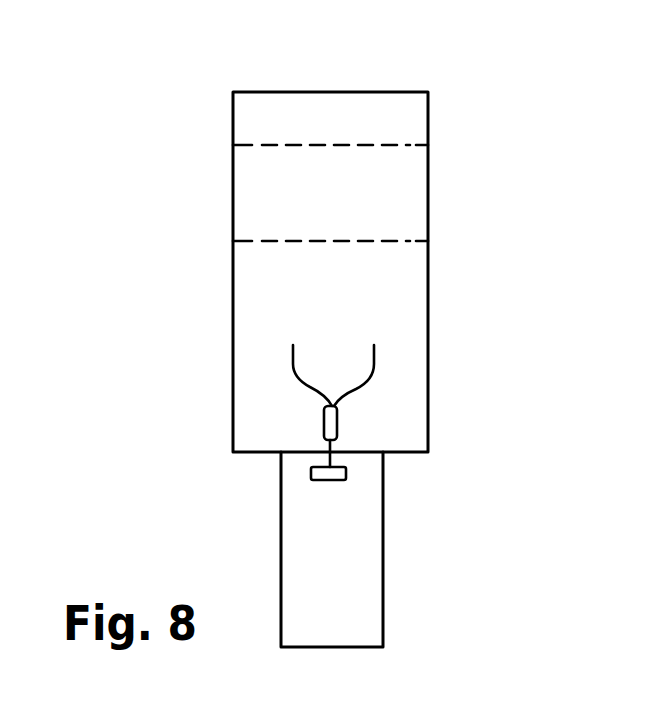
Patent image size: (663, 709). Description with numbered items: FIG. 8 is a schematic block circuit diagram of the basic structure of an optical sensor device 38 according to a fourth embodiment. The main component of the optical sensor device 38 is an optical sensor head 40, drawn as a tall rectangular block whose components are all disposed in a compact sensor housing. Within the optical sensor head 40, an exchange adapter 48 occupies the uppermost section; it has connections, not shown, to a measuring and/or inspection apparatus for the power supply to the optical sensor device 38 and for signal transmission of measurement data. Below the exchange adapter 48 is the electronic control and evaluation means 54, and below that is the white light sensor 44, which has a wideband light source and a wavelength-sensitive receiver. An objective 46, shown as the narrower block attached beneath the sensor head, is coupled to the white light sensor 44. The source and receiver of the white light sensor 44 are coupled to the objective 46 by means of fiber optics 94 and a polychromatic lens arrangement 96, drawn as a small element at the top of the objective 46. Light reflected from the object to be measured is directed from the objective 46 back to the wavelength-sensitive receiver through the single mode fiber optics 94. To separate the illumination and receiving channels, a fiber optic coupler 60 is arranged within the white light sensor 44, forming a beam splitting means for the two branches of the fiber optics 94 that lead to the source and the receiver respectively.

The optical sensor device 38 is at (177, 110).
The optical sensor head 40 is at (233, 222).
The exchange adapter 48 is at (411, 121).
The electronic control and evaluation means 54 is at (412, 198).
The white light sensor 44 is at (406, 313).
The fiber optics 94 is at (293, 373).
The fiber optic coupler 60 is at (325, 425).
The polychromatic lens arrangement 96 is at (331, 471).
The objective 46 is at (383, 605).